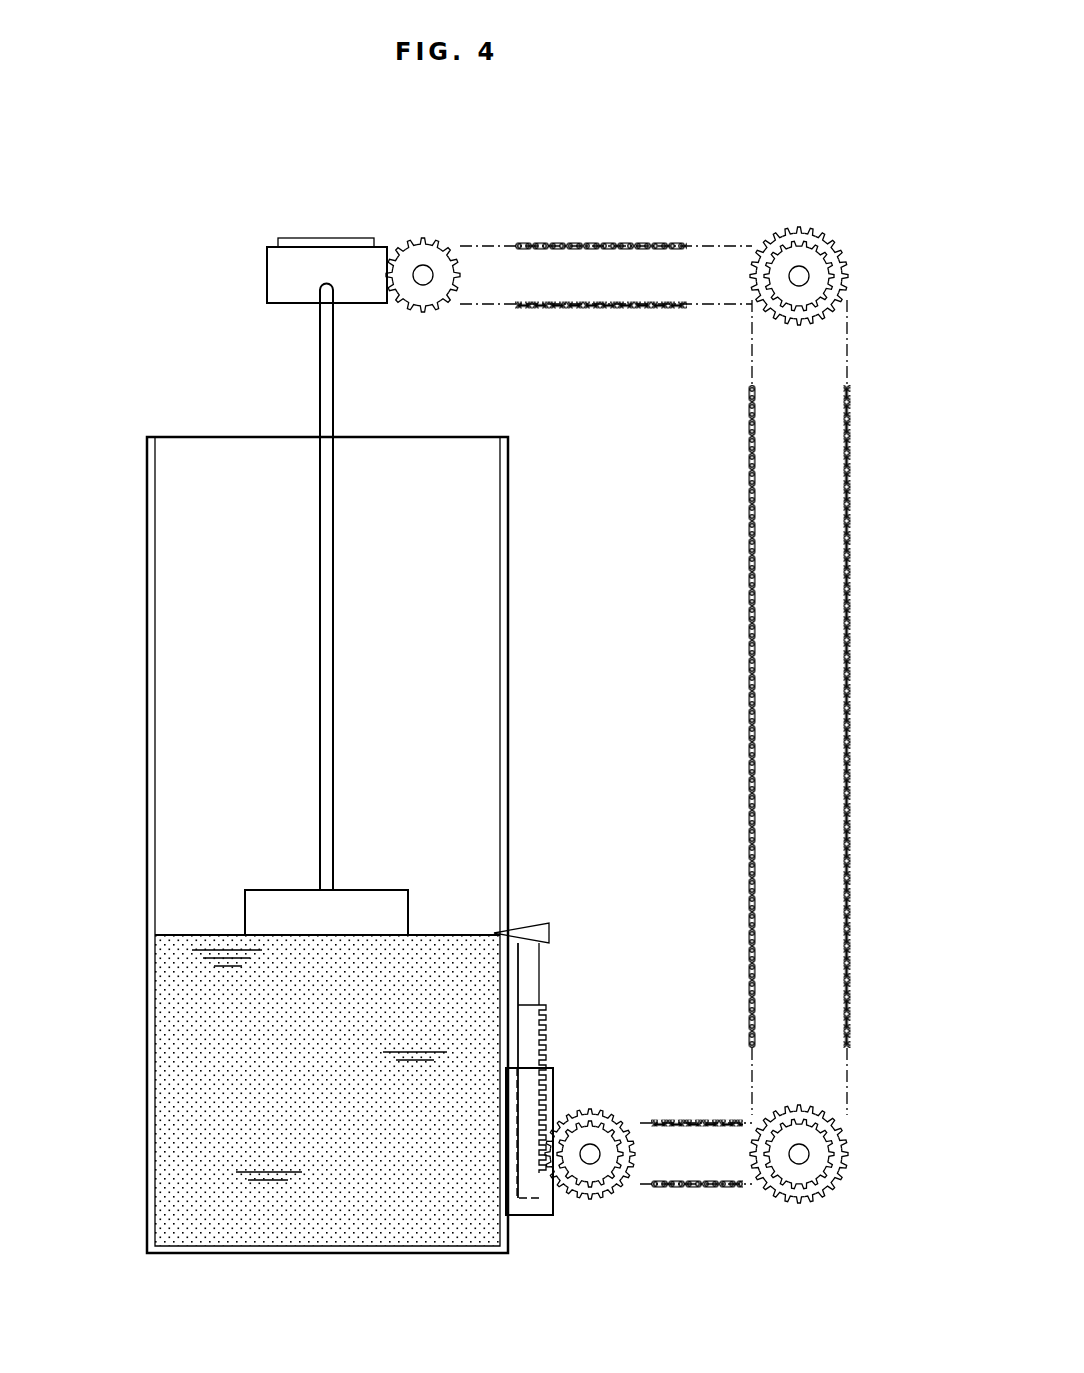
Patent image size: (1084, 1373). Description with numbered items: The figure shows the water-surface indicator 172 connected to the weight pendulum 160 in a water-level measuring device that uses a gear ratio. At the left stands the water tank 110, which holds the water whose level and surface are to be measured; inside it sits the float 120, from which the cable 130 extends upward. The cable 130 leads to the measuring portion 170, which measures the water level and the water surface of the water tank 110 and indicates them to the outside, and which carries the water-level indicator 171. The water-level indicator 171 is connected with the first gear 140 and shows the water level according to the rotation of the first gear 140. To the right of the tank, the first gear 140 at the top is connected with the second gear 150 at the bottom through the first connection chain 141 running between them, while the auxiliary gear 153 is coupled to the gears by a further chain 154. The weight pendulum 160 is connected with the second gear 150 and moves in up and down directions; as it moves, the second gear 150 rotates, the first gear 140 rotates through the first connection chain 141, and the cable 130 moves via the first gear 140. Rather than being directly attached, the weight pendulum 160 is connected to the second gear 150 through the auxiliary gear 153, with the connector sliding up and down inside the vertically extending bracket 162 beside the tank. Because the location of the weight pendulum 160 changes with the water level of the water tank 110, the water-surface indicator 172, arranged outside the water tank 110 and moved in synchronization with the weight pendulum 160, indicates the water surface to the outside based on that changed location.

The water tank 110 is at (147, 1102).
The float 120 is at (267, 890).
The cable 130 is at (320, 597).
The first gear 140 is at (836, 234).
The first connection chain 141 is at (860, 508).
The second gear 150 is at (832, 1203).
The auxiliary gear 153 is at (426, 270).
The chain 154 is at (597, 243).
The weight pendulum 160 is at (530, 1018).
The bracket 162 is at (530, 1215).
The measuring portion 170 is at (267, 271).
The water-level indicator 171 is at (312, 238).
The water-surface indicator 172 is at (553, 937).